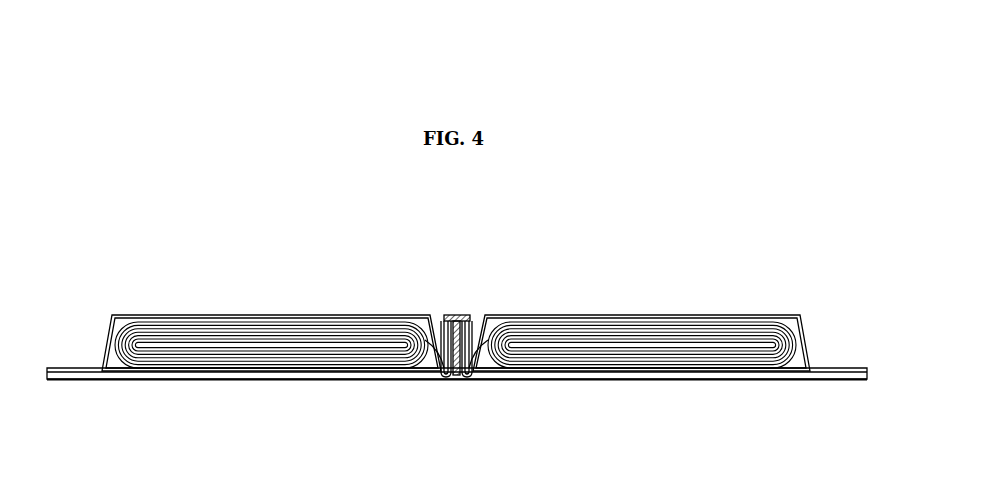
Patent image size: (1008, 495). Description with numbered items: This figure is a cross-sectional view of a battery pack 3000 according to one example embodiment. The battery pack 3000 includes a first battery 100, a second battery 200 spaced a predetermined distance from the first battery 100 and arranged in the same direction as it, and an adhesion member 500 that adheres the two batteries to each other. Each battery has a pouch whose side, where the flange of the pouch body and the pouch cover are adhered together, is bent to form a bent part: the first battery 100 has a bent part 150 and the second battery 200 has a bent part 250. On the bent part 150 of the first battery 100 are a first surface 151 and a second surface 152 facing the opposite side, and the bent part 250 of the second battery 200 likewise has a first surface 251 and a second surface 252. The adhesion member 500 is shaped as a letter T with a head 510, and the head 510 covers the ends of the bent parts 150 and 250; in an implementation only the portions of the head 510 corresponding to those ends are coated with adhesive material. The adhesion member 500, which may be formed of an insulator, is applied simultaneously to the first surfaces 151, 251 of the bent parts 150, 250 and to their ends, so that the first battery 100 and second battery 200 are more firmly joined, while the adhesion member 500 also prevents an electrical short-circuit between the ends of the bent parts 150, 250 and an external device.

The battery pack 3000 is at (97, 223).
The first battery 100 is at (649, 306).
The second battery 200 is at (272, 306).
The adhesion member 500 is at (441, 306).
The head 510 is at (461, 315).
The bent part 150 is at (535, 428).
The first surface 151 is at (467, 374).
The second surface 152 is at (508, 373).
The bent part 250 is at (448, 428).
The first surface 251 is at (460, 374).
The second surface 252 is at (405, 372).